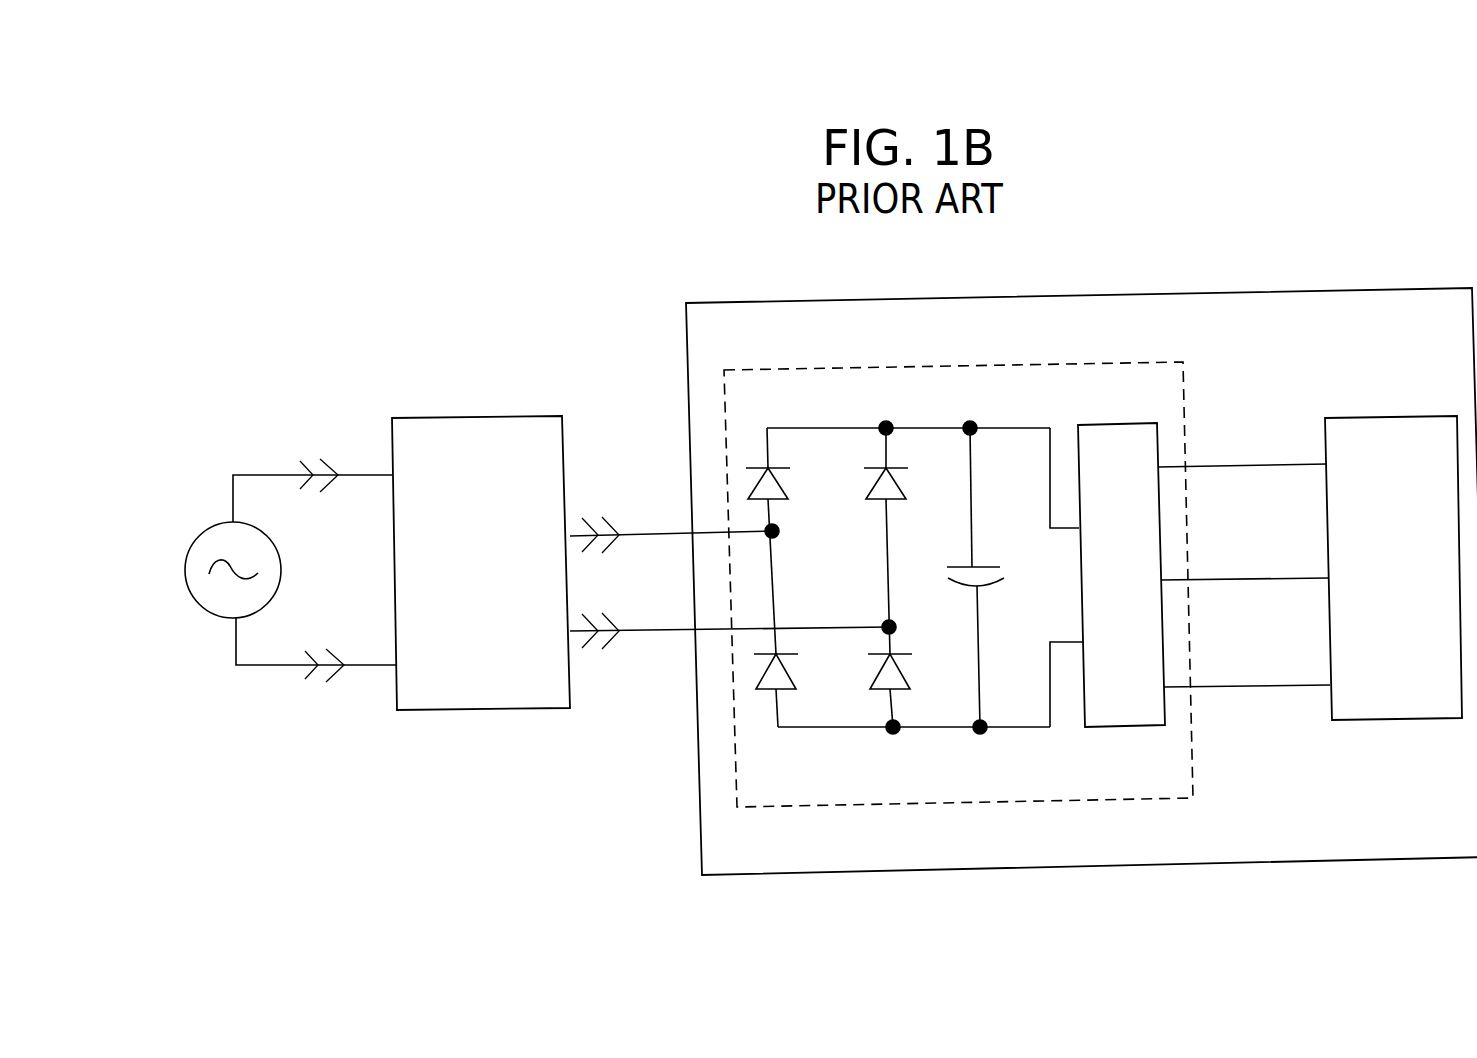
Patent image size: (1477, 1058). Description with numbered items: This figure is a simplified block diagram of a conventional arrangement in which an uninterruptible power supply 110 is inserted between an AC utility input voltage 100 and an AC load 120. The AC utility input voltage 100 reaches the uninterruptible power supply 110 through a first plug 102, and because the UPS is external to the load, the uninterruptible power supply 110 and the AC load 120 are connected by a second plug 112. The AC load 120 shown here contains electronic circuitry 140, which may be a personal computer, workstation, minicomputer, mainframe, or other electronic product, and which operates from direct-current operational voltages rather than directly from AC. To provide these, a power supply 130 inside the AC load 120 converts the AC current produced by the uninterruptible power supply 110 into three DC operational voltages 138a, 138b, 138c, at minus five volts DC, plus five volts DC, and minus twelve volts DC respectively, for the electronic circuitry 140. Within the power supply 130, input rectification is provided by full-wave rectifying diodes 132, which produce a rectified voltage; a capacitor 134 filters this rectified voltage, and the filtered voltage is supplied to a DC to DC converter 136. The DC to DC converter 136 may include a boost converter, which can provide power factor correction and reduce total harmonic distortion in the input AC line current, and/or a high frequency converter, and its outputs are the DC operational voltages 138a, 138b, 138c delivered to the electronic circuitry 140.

The AC utility input voltage 100 is at (193, 545).
The first plug 102 is at (316, 492).
The uninterruptible power supply 110 is at (497, 417).
The second plug 112 is at (729, 583).
The AC load 120 is at (1333, 288).
The power supply 130 is at (1186, 361).
The full-wave rectifying diodes 132 is at (898, 588).
The capacitor 134 is at (947, 572).
The DC to DC converter 136 is at (1130, 423).
The DC operational voltage 138a is at (1248, 462).
The DC operational voltage 138b is at (1232, 582).
The DC operational voltage 138c is at (1258, 689).
The electronic circuitry 140 is at (1362, 417).